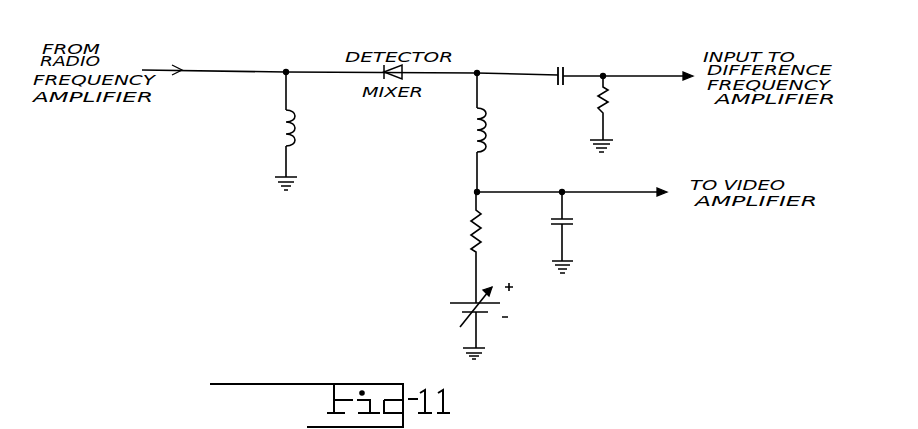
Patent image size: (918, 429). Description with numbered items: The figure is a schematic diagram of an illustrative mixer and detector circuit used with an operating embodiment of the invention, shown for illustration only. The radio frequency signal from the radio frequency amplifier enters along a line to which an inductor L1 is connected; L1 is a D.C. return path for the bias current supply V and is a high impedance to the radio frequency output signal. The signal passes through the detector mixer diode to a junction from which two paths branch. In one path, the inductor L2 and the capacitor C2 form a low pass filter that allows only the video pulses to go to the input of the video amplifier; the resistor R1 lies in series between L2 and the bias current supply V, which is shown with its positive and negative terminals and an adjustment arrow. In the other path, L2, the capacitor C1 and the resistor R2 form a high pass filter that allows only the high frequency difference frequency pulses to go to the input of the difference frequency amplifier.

The inductor L1 is at (274, 131).
The inductor L2 is at (492, 132).
The capacitor C1 is at (580, 64).
The capacitor C2 is at (573, 232).
The resistor R1 is at (488, 247).
The resistor R2 is at (612, 114).
The bias current supply V is at (475, 321).